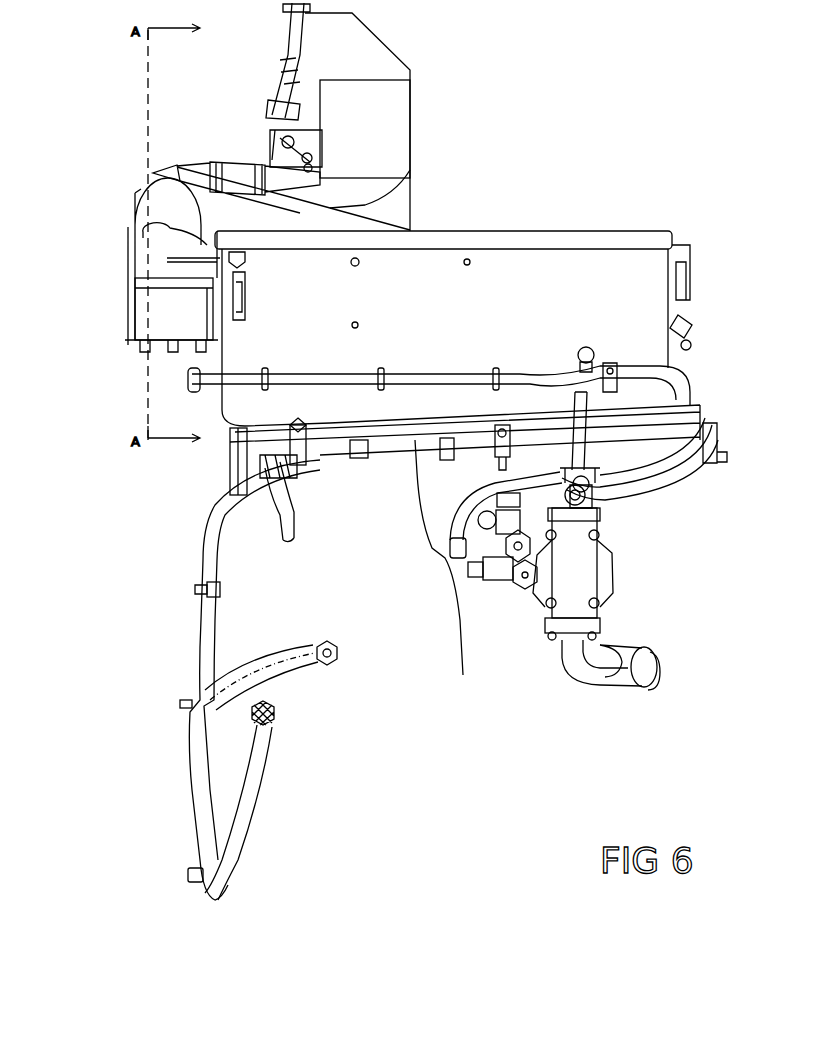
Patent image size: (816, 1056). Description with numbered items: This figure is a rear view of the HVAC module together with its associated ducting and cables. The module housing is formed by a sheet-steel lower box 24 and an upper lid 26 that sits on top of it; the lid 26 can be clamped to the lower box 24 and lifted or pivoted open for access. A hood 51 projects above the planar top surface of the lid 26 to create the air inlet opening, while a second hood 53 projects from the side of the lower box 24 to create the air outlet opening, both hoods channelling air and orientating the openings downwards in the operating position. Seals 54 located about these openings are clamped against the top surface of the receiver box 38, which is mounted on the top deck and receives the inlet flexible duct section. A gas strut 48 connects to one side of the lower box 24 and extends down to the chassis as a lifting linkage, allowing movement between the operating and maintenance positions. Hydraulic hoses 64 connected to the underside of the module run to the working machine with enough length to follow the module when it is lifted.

The lower box 24 is at (585, 332).
The upper lid 26 is at (508, 240).
The receiver box 38 is at (168, 312).
The gas strut 48 is at (597, 410).
The hood 51 is at (280, 220).
The hood 53 is at (180, 182).
The seals 54 is at (155, 234).
The hydraulic hoses 64 is at (439, 578).